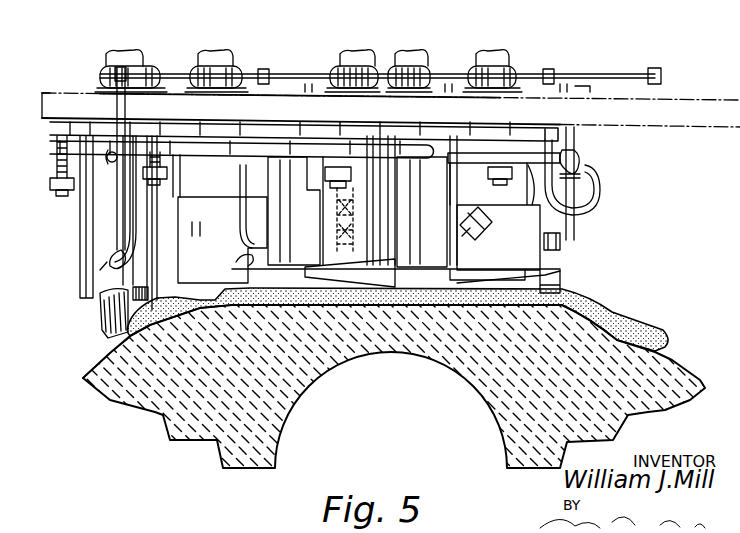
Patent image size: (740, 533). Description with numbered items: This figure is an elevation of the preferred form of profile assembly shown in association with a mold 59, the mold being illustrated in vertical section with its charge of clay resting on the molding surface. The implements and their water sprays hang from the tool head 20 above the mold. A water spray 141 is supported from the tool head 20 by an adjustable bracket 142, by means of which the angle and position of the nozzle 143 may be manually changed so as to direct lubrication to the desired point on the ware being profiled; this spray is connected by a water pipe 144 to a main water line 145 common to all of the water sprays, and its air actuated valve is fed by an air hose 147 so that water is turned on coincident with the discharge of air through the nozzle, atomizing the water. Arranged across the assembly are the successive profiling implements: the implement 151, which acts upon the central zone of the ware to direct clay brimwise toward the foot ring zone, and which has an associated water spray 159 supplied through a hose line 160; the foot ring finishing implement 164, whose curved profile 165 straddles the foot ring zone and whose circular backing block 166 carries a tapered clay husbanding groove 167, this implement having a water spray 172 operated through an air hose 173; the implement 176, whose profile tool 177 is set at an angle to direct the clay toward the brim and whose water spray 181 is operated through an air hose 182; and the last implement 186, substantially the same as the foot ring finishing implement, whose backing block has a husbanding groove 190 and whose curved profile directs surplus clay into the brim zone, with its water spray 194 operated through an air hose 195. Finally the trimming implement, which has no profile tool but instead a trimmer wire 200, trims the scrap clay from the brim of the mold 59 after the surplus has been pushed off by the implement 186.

The tool head 20 is at (668, 128).
The mold 59 is at (672, 396).
The water spray 141 is at (338, 246).
The adjustable bracket 142 is at (336, 206).
The nozzle 143 is at (334, 246).
The water pipe 144 is at (330, 80).
The main water line 145 is at (272, 73).
The air hose 147 is at (362, 78).
The implement 151 is at (535, 262).
The water spray 159 is at (566, 243).
The hose line 160 is at (586, 207).
The foot ring finishing implement 164 is at (392, 190).
The curved profile 165 is at (306, 206).
The backing block 166 is at (378, 202).
The clay husbanding groove 167 is at (392, 262).
The water spray 172 is at (505, 228).
The air hose 173 is at (455, 232).
The implement 176 is at (224, 206).
The profile tool 177 is at (154, 292).
The water spray 181 is at (221, 252).
The air hose 182 is at (238, 264).
The implement 186 is at (86, 284).
The husbanding groove 190 is at (104, 306).
The water spray 194 is at (96, 265).
The air hose 195 is at (130, 246).
The trimmer wire 200 is at (107, 355).